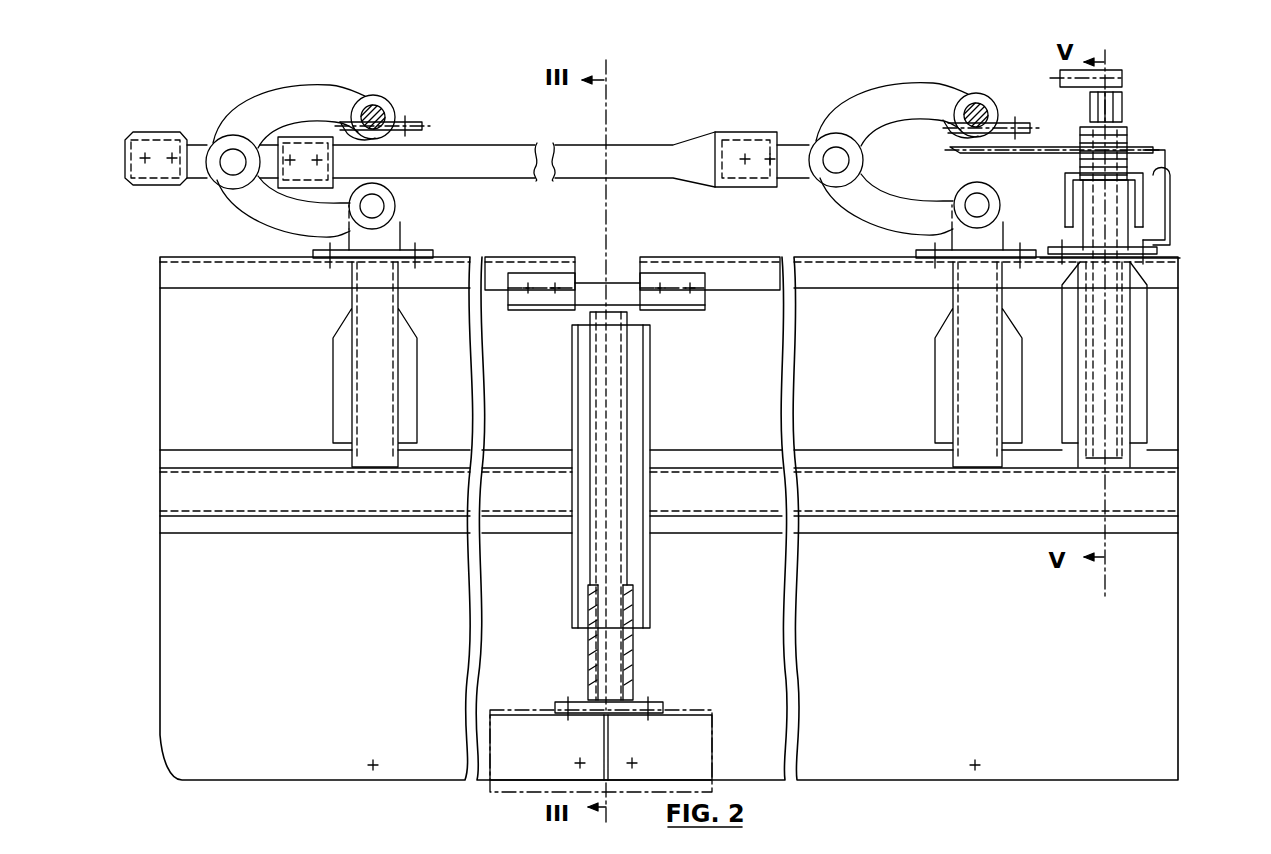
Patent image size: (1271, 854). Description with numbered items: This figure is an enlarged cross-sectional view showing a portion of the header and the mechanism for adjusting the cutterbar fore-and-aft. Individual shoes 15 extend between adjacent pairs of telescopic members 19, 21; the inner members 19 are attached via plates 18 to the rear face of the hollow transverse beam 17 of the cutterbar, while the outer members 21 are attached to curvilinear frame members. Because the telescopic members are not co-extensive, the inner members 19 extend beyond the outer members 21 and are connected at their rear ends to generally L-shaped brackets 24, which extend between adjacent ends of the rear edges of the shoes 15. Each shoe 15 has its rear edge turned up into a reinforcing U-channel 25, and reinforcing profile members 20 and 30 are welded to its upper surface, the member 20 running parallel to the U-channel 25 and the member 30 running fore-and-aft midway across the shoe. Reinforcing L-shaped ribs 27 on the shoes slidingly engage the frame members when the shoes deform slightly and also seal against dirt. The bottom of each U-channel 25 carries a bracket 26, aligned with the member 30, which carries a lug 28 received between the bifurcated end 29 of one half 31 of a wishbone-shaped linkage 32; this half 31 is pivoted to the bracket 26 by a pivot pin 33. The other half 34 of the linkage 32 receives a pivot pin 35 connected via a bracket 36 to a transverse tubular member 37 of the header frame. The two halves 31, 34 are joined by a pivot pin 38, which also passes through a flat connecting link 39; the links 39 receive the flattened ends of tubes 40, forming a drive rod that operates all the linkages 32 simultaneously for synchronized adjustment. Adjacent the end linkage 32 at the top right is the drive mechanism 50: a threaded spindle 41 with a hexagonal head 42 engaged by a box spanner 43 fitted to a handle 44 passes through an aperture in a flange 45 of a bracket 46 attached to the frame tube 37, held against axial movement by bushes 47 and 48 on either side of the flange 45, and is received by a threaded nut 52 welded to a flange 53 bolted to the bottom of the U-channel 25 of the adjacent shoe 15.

The shoe 15 is at (293, 655).
The hollow transverse beam 17 is at (713, 742).
The plate 18 is at (661, 702).
The inner telescopic member 19 is at (628, 398).
The reinforcing profile member 20 is at (330, 533).
The outer telescopic member 21 is at (634, 656).
The L-shaped bracket 24 is at (666, 310).
The U-channel 25 is at (519, 257).
The bracket 26 is at (434, 254).
The L-shaped rib 27 is at (572, 552).
The lug 28 is at (402, 244).
The bifurcated end 29 is at (396, 206).
The reinforcing profile member 30 is at (417, 352).
The linkage half 31 is at (272, 215).
The wishbone-shaped linkage 32 is at (362, 86).
The pivot pin 33 is at (363, 208).
The linkage half 34 is at (293, 102).
The pivot pin 35 is at (388, 115).
The bracket 36 is at (430, 126).
The transverse tubular member 37 is at (1171, 225).
The pivot pin 38 is at (233, 165).
The flat connecting link 39 is at (221, 140).
The tube 40 is at (156, 136).
The threaded spindle 41 is at (1125, 128).
The hexagonal head 42 is at (1108, 110).
The box spanner 43 is at (1123, 102).
The head plate 44 is at (1123, 76).
The flange 45 is at (1148, 182).
The bracket 46 is at (1162, 205).
The bush 47 is at (1066, 188).
The bush 48 is at (1086, 148).
The drive mechanism 50 is at (1091, 262).
The threaded nut 52 is at (1158, 250).
The flange 53 is at (1181, 258).